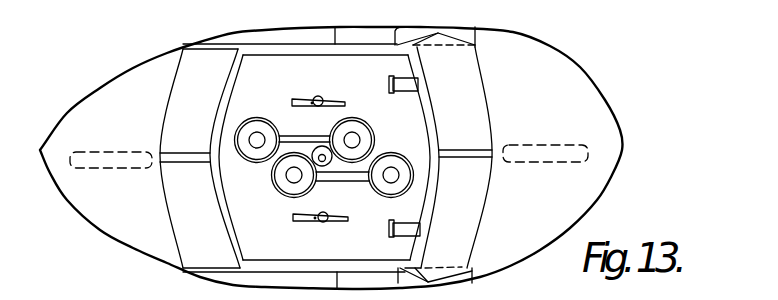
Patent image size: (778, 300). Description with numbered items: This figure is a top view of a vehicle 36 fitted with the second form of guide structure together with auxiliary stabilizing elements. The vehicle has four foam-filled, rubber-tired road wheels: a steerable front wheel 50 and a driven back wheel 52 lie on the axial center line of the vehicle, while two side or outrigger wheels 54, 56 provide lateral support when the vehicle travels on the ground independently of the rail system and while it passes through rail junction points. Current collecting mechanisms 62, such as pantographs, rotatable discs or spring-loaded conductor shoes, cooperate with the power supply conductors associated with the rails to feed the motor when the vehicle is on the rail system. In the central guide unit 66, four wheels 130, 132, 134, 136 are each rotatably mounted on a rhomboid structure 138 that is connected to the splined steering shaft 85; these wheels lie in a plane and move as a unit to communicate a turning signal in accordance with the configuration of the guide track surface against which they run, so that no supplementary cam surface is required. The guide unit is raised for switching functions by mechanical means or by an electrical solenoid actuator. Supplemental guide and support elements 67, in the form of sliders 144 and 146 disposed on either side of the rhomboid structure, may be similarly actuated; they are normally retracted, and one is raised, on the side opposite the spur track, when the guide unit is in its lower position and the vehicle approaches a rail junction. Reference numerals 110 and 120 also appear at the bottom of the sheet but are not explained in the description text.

The vehicle 36 is at (130, 246).
The steerable front wheel 50 is at (126, 152).
The driven back wheel 52 is at (549, 146).
The outrigger wheel 54 is at (477, 283).
The outrigger wheel 56 is at (477, 41).
The current collecting mechanism 62 is at (419, 87).
The guide unit 66 is at (383, 71).
The supplemental guide and support elements 67 is at (292, 219).
The splined steering shaft 85 is at (313, 146).
The bottom member 110 is at (375, 295).
The bottom member 120 is at (322, 295).
The wheel 130 is at (257, 117).
The wheel 132 is at (274, 189).
The wheel 134 is at (368, 130).
The wheel 136 is at (415, 149).
The rhomboid structure 138 is at (326, 186).
The slider 144 is at (328, 98).
The slider 146 is at (312, 223).